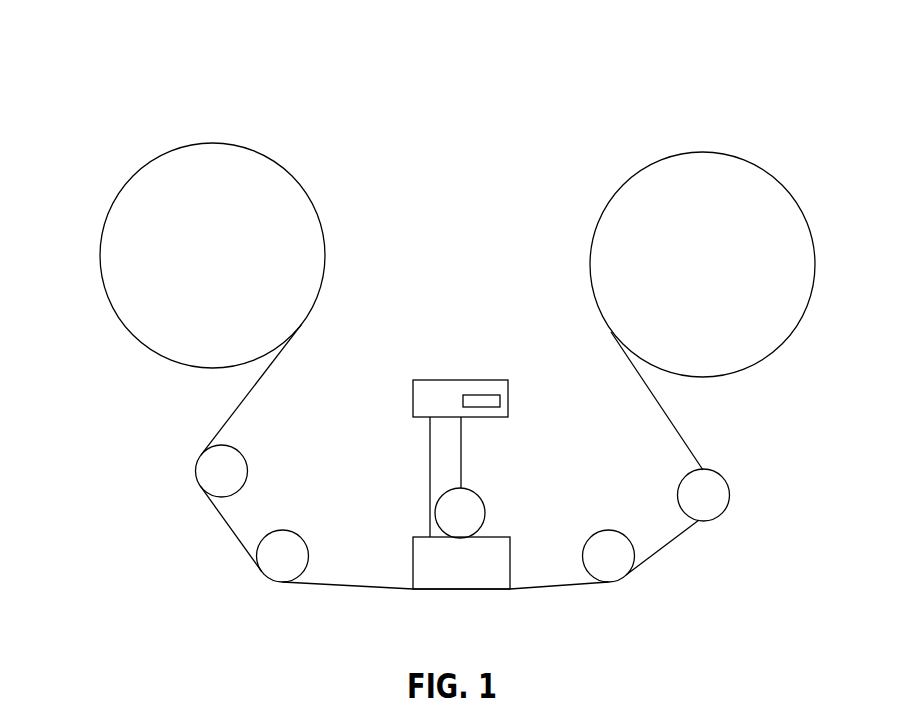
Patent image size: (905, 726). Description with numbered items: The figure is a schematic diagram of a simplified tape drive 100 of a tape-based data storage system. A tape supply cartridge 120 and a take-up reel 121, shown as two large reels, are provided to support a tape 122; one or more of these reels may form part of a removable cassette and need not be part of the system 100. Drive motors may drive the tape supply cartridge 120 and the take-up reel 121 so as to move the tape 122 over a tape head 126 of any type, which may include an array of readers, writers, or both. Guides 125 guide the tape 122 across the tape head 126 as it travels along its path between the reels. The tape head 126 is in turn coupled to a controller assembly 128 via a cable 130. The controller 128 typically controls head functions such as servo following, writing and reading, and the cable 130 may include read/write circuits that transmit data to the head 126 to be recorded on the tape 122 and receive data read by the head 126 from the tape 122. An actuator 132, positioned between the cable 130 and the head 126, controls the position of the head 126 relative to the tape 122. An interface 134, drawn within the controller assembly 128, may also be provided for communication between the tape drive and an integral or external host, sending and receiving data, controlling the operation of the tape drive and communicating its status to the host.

The tape drive 100 is at (101, 143).
The tape supply cartridge 120 is at (213, 143).
The take-up reel 121 is at (700, 152).
The tape 122 is at (352, 585).
The guides 125 is at (249, 462).
The tape head 126 is at (510, 567).
The controller assembly 128 is at (458, 380).
The cable 130 is at (435, 512).
The actuator 132 is at (478, 495).
The interface 134 is at (492, 380).